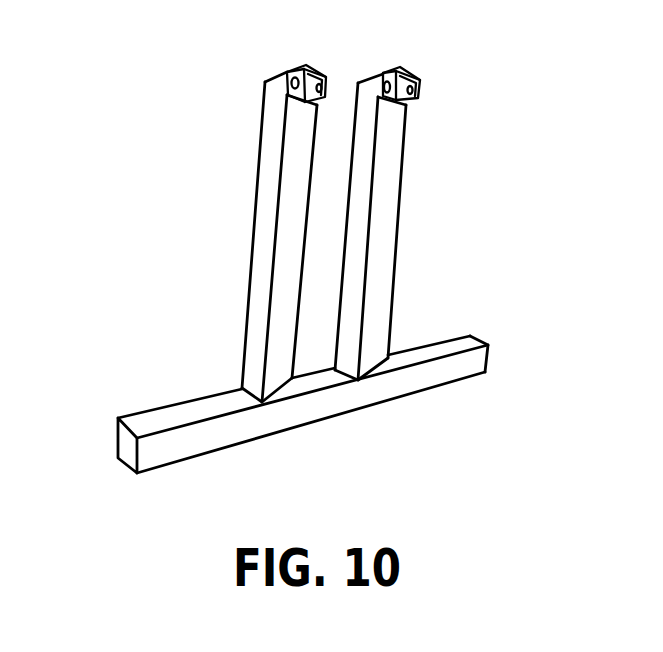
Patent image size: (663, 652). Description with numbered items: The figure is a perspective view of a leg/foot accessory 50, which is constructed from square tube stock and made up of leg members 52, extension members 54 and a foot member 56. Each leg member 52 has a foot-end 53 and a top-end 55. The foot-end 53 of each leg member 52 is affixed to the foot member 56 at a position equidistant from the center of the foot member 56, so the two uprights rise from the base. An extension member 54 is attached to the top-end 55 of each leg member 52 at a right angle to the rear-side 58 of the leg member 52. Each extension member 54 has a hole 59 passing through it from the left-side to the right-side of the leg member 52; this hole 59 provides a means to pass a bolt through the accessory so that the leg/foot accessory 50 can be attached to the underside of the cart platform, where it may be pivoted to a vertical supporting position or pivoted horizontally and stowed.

The leg/foot accessory 50 is at (316, 280).
The leg member 52 is at (428, 214).
The foot-end 53 is at (252, 387).
The extension member 54 is at (293, 81).
The top-end 55 is at (283, 102).
The foot member 56 is at (407, 392).
The rear-side 58 is at (218, 223).
The hole 59 is at (387, 83).